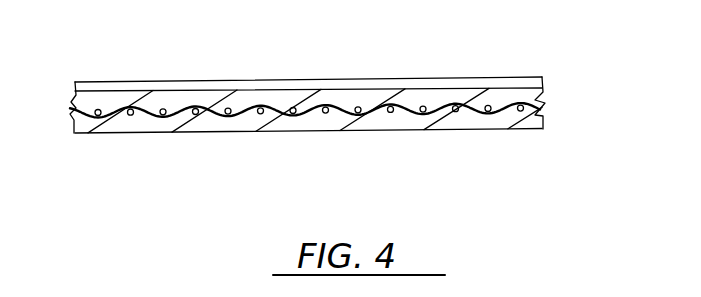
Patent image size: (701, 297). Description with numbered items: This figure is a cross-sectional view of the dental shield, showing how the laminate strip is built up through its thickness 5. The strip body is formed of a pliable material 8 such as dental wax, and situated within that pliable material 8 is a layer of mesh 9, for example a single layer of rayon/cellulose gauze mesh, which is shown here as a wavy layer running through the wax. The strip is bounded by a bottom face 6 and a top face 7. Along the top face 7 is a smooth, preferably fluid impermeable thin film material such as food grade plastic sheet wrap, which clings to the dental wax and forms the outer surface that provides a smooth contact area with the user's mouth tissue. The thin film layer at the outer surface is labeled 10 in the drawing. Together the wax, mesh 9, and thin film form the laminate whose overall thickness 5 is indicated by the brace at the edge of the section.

The thickness 5 is at (555, 77).
The bottom face 6 is at (468, 130).
The top face 7 is at (483, 78).
The pliable material 8 is at (287, 132).
The layer of mesh 9 is at (122, 113).
The surface film 10 is at (173, 80).